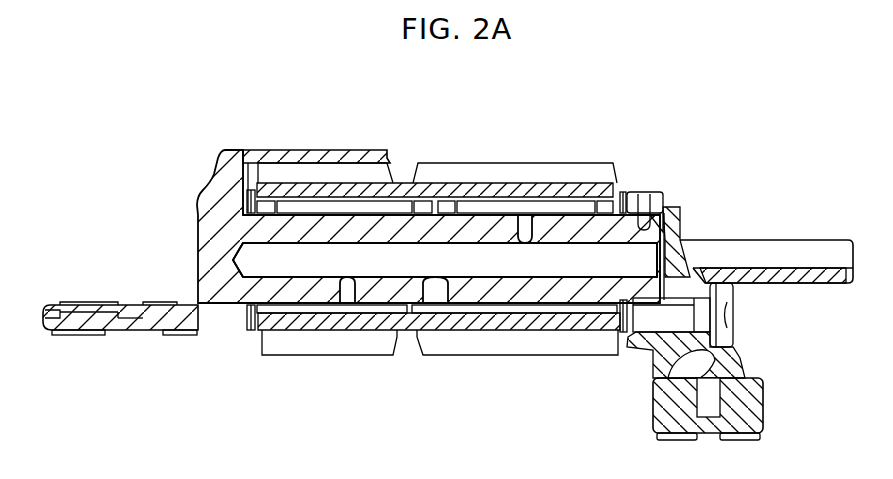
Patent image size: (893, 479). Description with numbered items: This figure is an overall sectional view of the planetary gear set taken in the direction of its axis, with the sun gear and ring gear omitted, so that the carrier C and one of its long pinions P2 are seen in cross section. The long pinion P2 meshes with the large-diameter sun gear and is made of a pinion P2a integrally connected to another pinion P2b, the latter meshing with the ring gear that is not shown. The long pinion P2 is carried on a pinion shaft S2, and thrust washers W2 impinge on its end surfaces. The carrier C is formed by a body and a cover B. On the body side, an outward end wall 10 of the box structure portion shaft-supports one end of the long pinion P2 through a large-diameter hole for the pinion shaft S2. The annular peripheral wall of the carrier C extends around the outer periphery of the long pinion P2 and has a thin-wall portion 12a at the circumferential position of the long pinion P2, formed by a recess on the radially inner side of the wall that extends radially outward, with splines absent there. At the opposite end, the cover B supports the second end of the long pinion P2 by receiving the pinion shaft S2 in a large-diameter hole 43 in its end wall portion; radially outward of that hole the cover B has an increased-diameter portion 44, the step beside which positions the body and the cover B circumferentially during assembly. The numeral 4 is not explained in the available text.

The carrier C is at (212, 166).
The outward end wall 10 is at (198, 210).
The thin-wall portion 12a is at (303, 150).
The pinion shaft S2 is at (208, 270).
The thrust washer W2 is at (623, 192).
The increased-diameter portion 44 is at (665, 200).
The large-diameter hole 43 is at (677, 225).
The long pinion P2 is at (406, 352).
The pinion P2a is at (327, 353).
The pinion P2b is at (510, 350).
The bracket 4 is at (630, 340).
The cover B is at (766, 405).